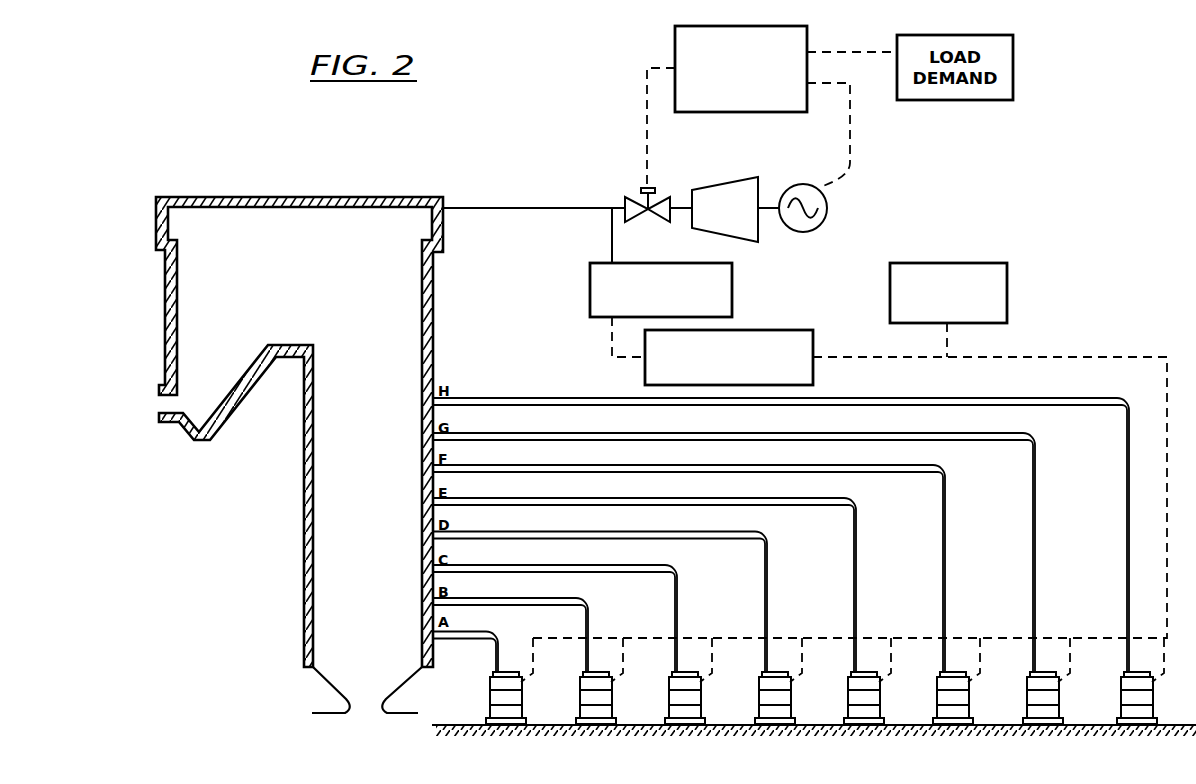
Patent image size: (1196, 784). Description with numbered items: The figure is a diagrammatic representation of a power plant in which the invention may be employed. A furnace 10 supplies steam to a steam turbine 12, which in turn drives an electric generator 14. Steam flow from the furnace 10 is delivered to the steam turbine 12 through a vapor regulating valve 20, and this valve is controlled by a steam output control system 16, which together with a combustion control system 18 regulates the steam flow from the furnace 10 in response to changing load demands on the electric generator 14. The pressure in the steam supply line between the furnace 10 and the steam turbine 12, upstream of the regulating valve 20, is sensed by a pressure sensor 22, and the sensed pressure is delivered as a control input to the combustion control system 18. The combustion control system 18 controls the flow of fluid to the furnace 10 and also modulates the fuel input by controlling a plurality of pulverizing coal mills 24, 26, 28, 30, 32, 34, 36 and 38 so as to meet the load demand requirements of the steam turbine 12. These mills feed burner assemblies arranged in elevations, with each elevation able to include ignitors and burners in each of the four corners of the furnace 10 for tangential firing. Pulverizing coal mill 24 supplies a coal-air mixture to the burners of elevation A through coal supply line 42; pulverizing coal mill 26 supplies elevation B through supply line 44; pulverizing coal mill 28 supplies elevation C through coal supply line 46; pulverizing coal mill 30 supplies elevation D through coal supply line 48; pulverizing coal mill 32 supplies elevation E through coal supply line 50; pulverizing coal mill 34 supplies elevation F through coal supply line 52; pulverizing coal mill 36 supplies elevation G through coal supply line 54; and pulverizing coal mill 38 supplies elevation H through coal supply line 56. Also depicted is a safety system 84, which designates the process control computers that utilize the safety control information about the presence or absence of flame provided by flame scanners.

The furnace 10 is at (433, 288).
The steam turbine 12 is at (742, 177).
The electric generator 14 is at (827, 203).
The steam output control system 16 is at (675, 33).
The combustion control system 18 is at (785, 330).
The vapor regulating valve 20 is at (630, 197).
The pressure sensor 22 is at (732, 287).
The pulverizing coal mill 24 is at (523, 702).
The pulverizing coal mill 26 is at (613, 702).
The pulverizing coal mill 28 is at (702, 702).
The pulverizing coal mill 30 is at (792, 702).
The pulverizing coal mill 32 is at (881, 702).
The pulverizing coal mill 34 is at (970, 702).
The pulverizing coal mill 36 is at (1060, 702).
The pulverizing coal mill 38 is at (1154, 702).
The coal supply line 42 is at (511, 638).
The supply line 44 is at (600, 622).
The coal supply line 46 is at (689, 600).
The coal supply line 48 is at (779, 580).
The coal supply line 50 is at (868, 556).
The coal supply line 52 is at (958, 529).
The coal supply line 54 is at (1048, 495).
The coal supply line 56 is at (1133, 444).
The safety system 84 is at (1007, 274).